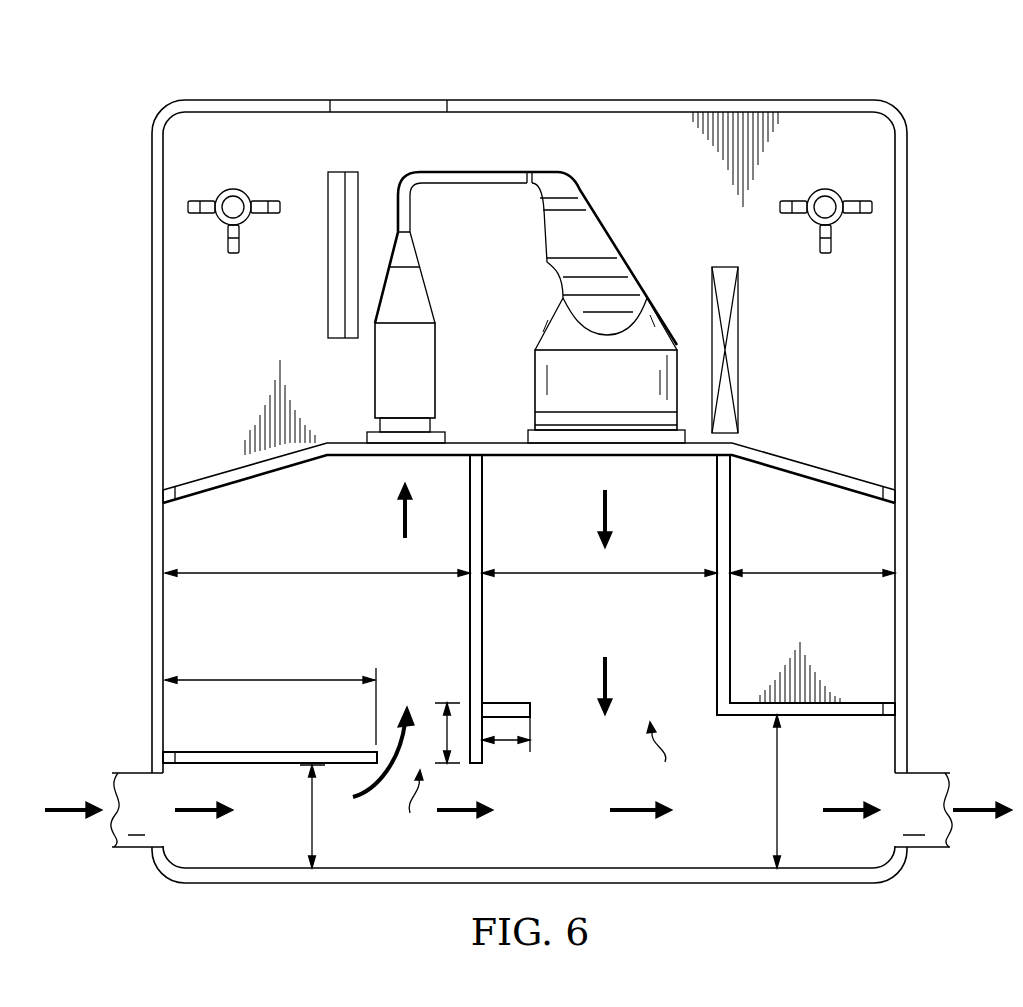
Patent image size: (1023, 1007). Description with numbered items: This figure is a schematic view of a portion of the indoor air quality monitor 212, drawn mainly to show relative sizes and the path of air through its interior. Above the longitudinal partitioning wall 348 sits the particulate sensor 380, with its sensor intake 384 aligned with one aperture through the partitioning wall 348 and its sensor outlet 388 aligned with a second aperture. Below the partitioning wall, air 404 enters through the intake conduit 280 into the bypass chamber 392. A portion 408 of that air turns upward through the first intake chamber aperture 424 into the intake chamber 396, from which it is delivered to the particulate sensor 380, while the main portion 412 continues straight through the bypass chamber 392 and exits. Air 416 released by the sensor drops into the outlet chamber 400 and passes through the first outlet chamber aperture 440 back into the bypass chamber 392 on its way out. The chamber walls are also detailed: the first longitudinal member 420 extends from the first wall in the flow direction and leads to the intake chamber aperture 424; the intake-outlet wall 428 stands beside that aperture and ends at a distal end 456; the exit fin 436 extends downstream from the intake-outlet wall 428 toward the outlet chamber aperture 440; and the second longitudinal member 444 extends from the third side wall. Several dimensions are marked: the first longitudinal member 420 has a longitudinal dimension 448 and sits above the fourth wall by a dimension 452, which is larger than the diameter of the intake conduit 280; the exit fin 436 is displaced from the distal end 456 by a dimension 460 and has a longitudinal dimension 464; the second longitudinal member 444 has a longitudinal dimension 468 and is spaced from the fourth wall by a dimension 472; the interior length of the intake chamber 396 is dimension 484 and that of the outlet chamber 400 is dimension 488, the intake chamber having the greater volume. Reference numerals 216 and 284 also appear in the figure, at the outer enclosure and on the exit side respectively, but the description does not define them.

The housing 216 is at (650, 92).
The indoor air quality monitor 212 is at (667, 243).
The particulate sensor 380 is at (418, 245).
The sensor intake 384 is at (375, 388).
The sensor outlet 388 is at (535, 388).
The longitudinal partitioning wall 348 is at (232, 470).
The dimension 484 is at (315, 573).
The air released by the particulate sensor 416 is at (620, 510).
The outlet chamber 400 is at (700, 540).
The intake chamber 396 is at (186, 624).
The longitudinal dimension 448 is at (270, 678).
The intake-outlet wall 428 is at (470, 622).
The dimension 488 is at (600, 575).
The longitudinal dimension 468 is at (820, 575).
The dimension 460 is at (427, 703).
The exit fin 436 is at (508, 703).
The first longitudinal member 420 is at (268, 750).
The longitudinal dimension 464 is at (525, 745).
The distal end 456 is at (482, 765).
The first outlet chamber aperture 440 is at (668, 758).
The second longitudinal member 444 is at (812, 718).
The dimension 472 is at (777, 790).
The dimension 452 is at (312, 818).
The portion of air 408 is at (375, 797).
The first intake chamber aperture 424 is at (410, 809).
The main portion of air 412 is at (455, 815).
The air 404 is at (70, 815).
The intake conduit 280 is at (135, 848).
The bypass chamber 392 is at (214, 853).
The outlet 284 is at (925, 848).